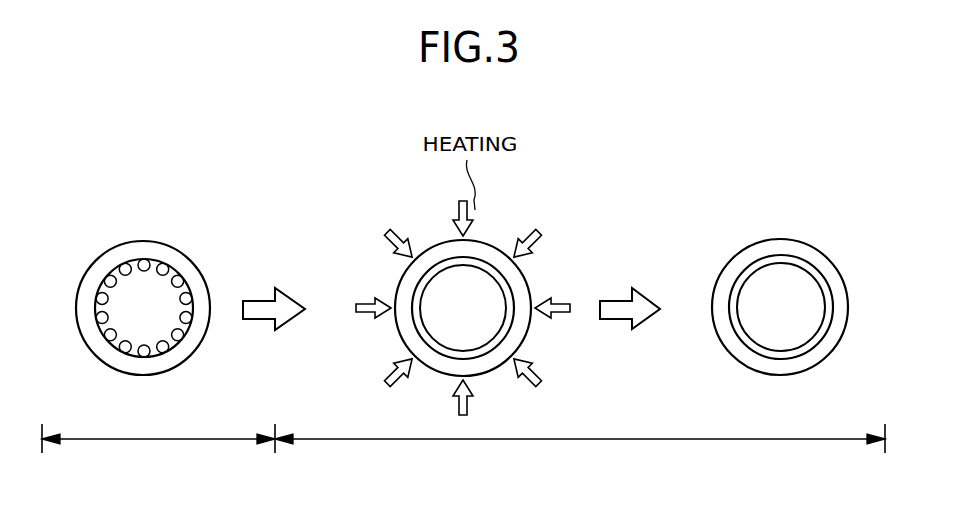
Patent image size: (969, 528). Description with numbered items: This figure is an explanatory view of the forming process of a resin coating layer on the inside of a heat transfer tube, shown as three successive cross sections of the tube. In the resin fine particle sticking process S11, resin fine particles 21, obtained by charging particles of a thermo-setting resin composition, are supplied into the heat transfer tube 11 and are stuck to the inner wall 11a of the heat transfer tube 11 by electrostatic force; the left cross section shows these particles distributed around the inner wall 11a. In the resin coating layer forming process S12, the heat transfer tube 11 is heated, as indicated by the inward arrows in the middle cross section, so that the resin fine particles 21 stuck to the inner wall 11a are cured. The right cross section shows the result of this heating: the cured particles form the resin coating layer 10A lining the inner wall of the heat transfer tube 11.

The heat transfer tube 11 is at (145, 250).
The inner wall 11a is at (157, 351).
The resin fine particles 21 is at (181, 283).
The resin coating layer 10A is at (780, 262).
The resin fine particle sticking process S11 is at (157, 442).
The resin coating layer forming process S12 is at (578, 441).